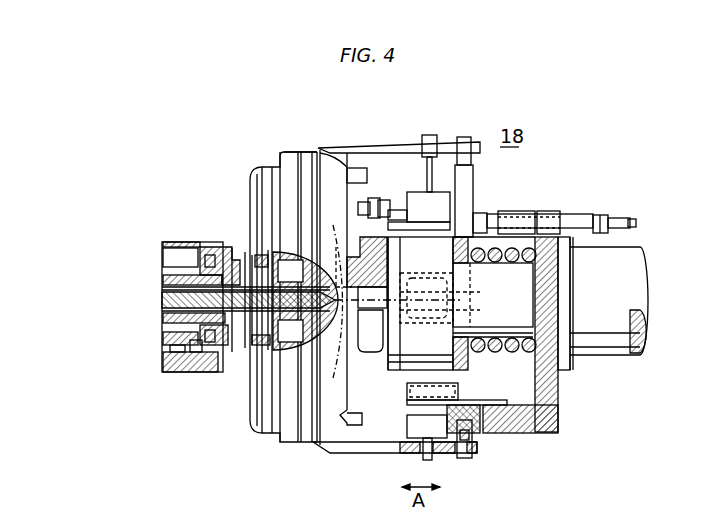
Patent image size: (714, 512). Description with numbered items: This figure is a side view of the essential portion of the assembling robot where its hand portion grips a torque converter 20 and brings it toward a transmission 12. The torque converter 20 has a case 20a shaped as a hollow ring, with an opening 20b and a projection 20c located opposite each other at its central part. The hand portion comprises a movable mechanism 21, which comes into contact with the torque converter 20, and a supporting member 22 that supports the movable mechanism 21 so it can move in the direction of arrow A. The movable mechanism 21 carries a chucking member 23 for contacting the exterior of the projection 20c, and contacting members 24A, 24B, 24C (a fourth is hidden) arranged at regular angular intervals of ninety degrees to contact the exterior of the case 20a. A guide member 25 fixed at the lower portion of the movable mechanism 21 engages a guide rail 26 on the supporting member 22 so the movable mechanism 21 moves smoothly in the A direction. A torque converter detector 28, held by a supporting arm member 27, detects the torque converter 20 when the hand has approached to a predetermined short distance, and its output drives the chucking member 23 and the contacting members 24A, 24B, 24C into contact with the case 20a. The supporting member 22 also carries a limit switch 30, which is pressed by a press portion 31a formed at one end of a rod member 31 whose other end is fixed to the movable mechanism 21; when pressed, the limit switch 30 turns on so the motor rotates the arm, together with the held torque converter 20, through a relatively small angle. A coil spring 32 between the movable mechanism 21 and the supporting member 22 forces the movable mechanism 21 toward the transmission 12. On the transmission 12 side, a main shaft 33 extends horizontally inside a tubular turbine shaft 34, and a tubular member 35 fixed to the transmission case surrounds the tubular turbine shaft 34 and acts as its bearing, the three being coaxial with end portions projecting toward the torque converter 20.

The transmission 12 is at (164, 244).
The torque converter 20 is at (254, 178).
The case 20a is at (297, 153).
The opening 20b is at (245, 260).
The projection 20c is at (393, 278).
The movable mechanism 21 is at (443, 136).
The supporting member 22 is at (578, 367).
The chucking member 23 is at (362, 240).
The contacting member 24A is at (383, 143).
The contacting member 24B is at (374, 310).
The contacting member 24C is at (383, 452).
The guide member 25 is at (407, 380).
The guide rail 26 is at (516, 403).
The supporting arm member 27 is at (397, 212).
The torque converter detector 28 is at (363, 202).
The limit switch 30 is at (599, 214).
The rod member 31 is at (490, 214).
The press portion 31a is at (596, 216).
The coil spring 32 is at (527, 352).
The main shaft 33 is at (165, 306).
The tubular turbine shaft 34 is at (165, 288).
The tubular member 35 is at (225, 250).